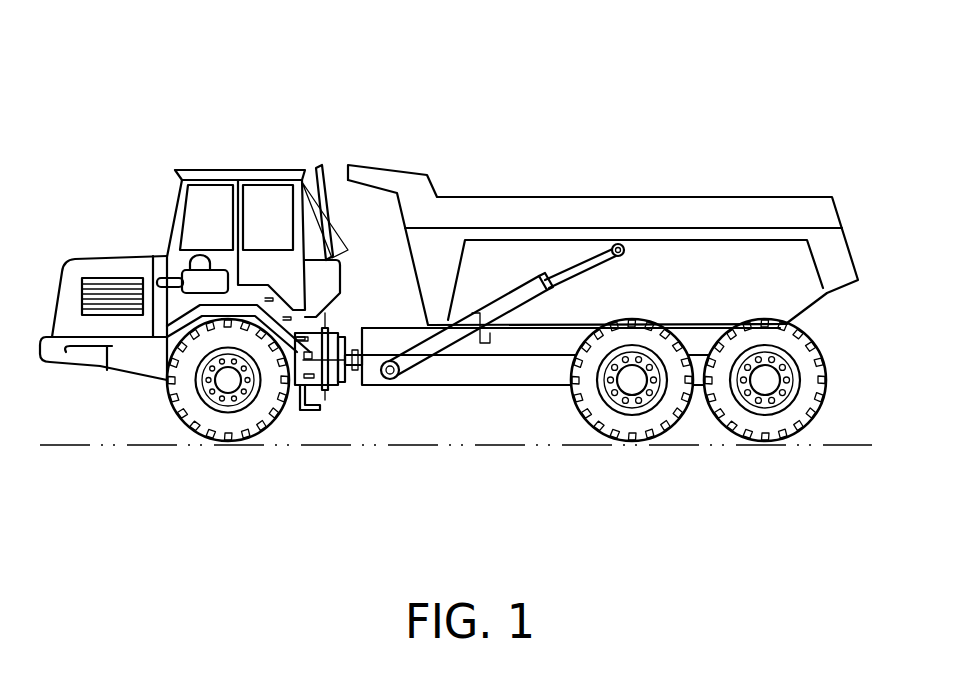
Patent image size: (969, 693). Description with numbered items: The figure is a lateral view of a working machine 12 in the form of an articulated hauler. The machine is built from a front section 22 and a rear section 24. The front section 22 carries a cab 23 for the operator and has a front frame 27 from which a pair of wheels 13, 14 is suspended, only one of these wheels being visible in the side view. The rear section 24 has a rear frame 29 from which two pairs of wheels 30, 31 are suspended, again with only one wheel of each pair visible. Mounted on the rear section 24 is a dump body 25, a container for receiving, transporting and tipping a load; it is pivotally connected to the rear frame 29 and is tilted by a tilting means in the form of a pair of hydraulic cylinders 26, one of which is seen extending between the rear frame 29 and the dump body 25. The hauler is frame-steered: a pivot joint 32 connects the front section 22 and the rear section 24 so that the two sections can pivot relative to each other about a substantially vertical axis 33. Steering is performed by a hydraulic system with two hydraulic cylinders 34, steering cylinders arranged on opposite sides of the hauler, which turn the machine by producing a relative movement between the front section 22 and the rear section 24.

The working machine 12 is at (565, 62).
The wheel 13 is at (199, 424).
The wheel 14 is at (212, 423).
The front section 22 is at (208, 122).
The cab 23 is at (253, 175).
The rear section 24 is at (770, 132).
The dump body 25 is at (630, 212).
The hydraulic cylinders 26 is at (443, 343).
The front frame 27 is at (92, 358).
The rear frame 29 is at (445, 373).
The wheels 30 is at (645, 422).
The wheels 31 is at (780, 422).
The pivot joint 32 is at (333, 391).
The vertical axis 33 is at (323, 407).
The hydraulic cylinders 34 is at (362, 367).